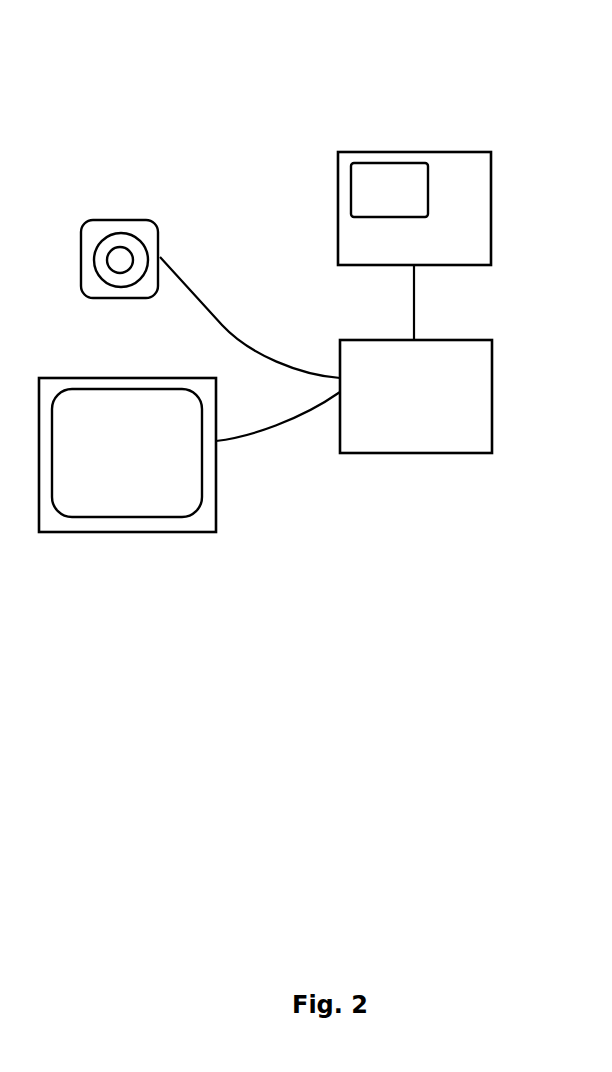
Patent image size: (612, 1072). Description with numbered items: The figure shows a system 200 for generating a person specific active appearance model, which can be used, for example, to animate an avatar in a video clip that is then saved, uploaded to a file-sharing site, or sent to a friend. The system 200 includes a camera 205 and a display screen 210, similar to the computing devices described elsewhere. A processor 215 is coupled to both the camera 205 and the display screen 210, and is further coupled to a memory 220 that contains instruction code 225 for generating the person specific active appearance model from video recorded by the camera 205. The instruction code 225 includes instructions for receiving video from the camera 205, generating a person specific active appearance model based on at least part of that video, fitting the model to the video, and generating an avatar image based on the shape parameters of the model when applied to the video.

The system 200 is at (248, 58).
The camera 205 is at (118, 220).
The display screen 210 is at (165, 378).
The processor 215 is at (380, 340).
The memory 220 is at (337, 242).
The instruction code 225 is at (370, 163).